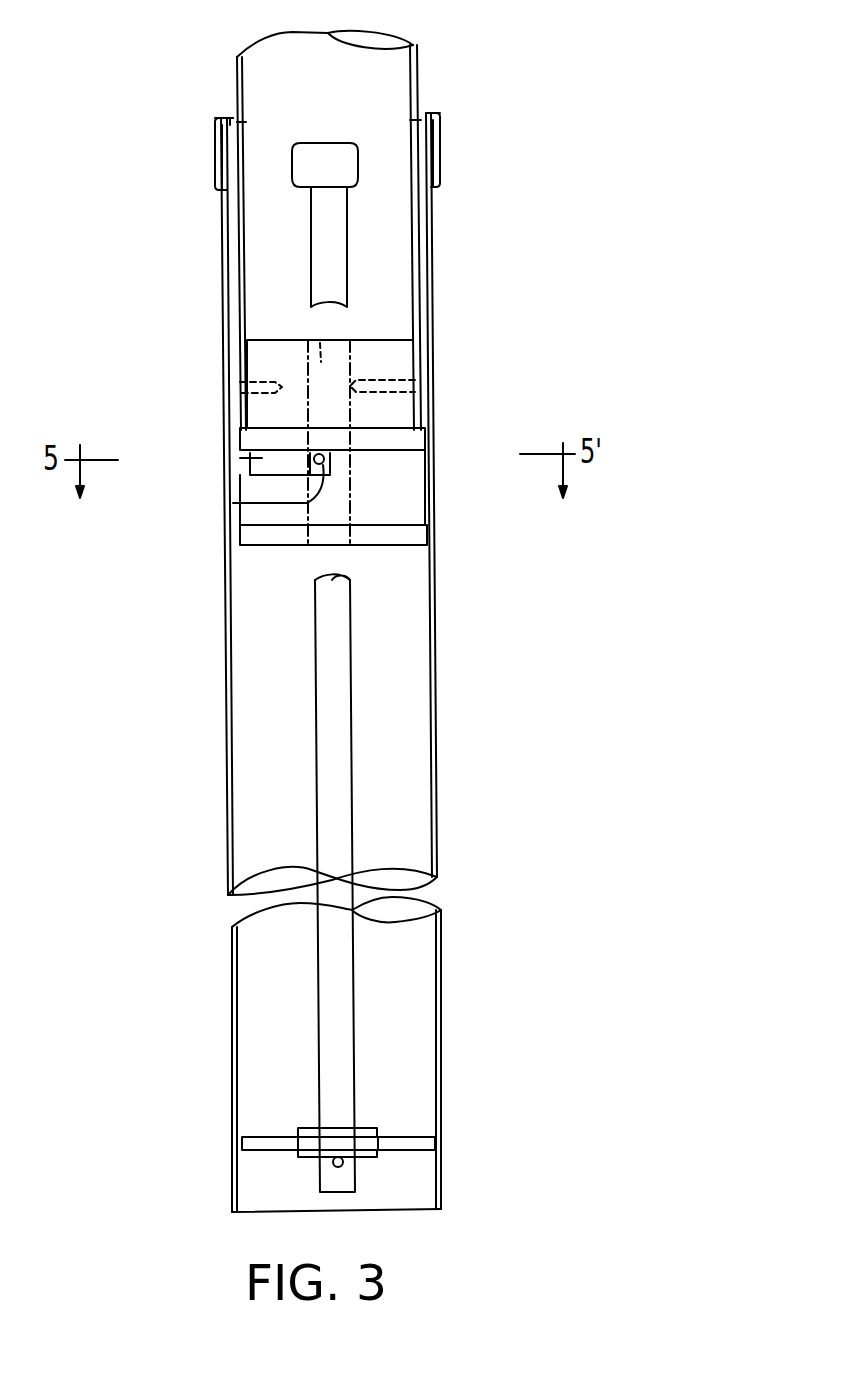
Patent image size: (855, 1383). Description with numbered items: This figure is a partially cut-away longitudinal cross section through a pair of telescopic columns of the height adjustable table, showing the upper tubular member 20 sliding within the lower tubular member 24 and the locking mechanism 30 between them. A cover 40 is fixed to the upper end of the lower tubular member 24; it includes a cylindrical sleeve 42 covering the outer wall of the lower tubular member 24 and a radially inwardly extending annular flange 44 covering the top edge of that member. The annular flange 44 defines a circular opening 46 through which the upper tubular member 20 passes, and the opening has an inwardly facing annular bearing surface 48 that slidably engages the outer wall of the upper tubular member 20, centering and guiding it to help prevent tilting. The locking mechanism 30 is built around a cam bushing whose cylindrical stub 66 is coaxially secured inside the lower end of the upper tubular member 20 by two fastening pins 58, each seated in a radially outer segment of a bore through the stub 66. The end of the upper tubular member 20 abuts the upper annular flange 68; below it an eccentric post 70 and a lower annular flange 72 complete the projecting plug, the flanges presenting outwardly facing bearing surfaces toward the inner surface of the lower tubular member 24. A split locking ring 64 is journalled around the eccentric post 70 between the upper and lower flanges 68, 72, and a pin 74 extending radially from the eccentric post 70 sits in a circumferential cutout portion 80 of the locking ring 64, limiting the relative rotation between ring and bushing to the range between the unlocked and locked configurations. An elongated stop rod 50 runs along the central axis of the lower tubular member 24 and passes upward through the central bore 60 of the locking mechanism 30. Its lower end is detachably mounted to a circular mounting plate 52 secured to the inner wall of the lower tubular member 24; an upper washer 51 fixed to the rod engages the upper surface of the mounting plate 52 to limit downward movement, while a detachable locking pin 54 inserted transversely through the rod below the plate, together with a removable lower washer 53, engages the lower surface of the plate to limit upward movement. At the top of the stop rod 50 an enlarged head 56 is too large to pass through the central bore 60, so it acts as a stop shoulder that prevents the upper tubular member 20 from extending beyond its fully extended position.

The upper tubular member 20 is at (418, 60).
The lower tubular member 24 is at (438, 607).
The locking mechanism 30 is at (270, 560).
The cover 40 is at (208, 189).
The cylindrical sleeve 42 is at (215, 153).
The annular flange 44 is at (235, 121).
The circular opening 46 is at (232, 120).
The annular bearing surface 48 is at (240, 125).
The stop rod 50 is at (337, 697).
The upper washer 51 is at (308, 1133).
The mounting plate 52 is at (403, 1132).
The lower washer 53 is at (297, 1160).
The locking pin 54 is at (343, 1163).
The enlarged head 56 is at (326, 153).
The fastening pin 58 is at (268, 380).
The central bore 60 is at (320, 343).
The locking ring 64 is at (410, 478).
The cylindrical stub 66 is at (392, 363).
The upper annular flange 68 is at (410, 437).
The eccentric post 70 is at (240, 458).
The lower annular flange 72 is at (415, 530).
The pin 74 is at (232, 505).
The cutout portion 80 is at (243, 475).